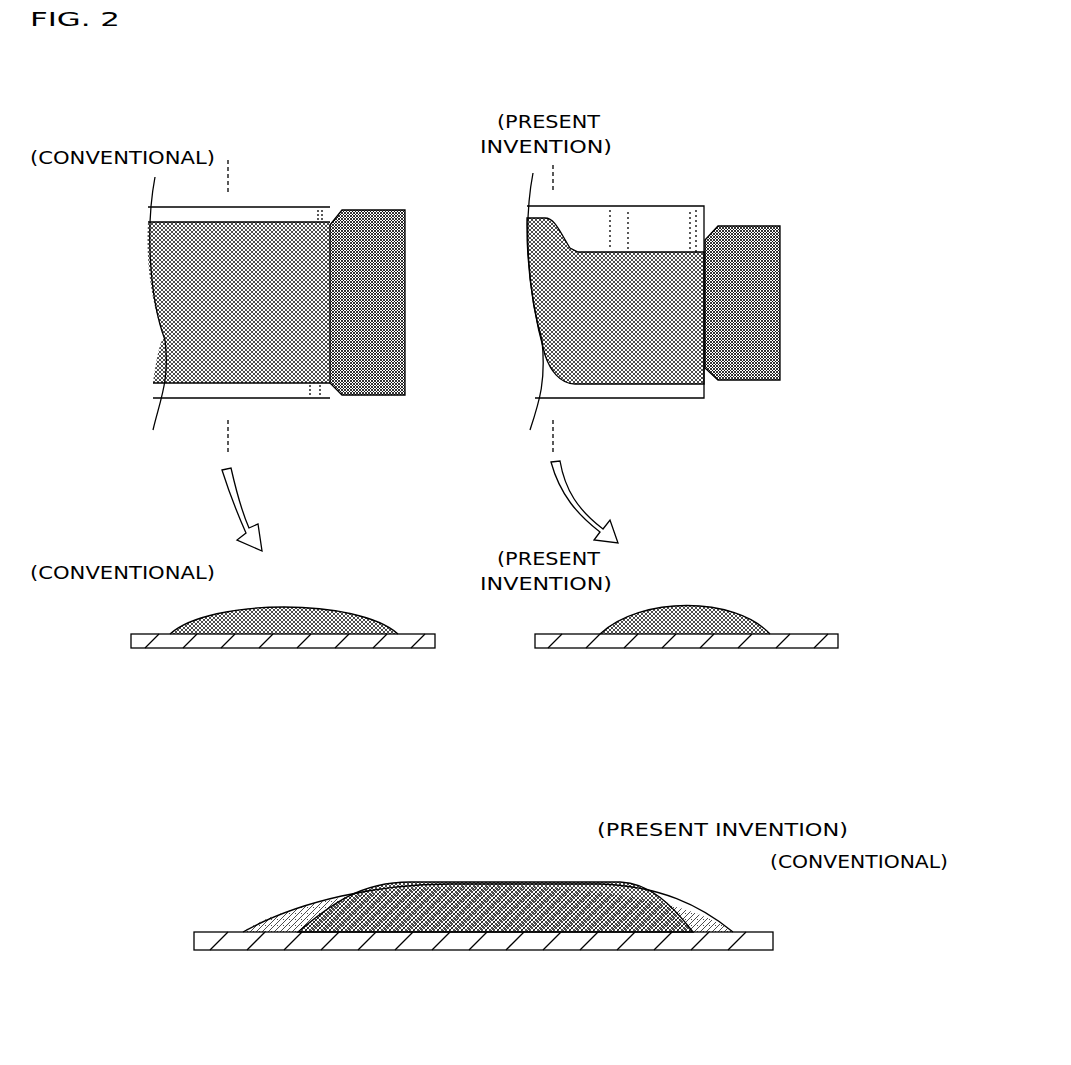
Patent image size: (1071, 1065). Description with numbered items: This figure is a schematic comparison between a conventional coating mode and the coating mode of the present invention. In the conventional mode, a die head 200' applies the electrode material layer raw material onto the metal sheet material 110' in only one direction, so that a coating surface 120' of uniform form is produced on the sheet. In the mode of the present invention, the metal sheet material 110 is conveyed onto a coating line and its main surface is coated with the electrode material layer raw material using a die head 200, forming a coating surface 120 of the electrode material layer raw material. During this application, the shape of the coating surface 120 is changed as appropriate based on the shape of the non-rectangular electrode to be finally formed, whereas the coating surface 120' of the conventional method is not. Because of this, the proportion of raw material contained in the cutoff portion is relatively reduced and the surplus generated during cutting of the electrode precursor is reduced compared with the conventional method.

The metal sheet material 110 is at (557, 538).
The metal sheet material 110' is at (299, 387).
The coating surface of the electrode material layer raw material 120 is at (541, 529).
The coating surface of the electrode material layer raw material 120' is at (457, 529).
The die head 200 is at (776, 237).
The die head 200' is at (394, 243).